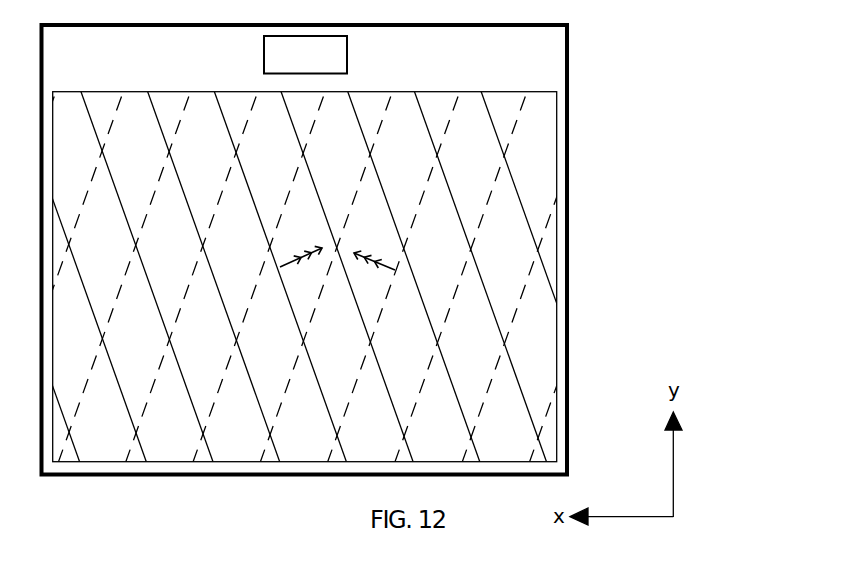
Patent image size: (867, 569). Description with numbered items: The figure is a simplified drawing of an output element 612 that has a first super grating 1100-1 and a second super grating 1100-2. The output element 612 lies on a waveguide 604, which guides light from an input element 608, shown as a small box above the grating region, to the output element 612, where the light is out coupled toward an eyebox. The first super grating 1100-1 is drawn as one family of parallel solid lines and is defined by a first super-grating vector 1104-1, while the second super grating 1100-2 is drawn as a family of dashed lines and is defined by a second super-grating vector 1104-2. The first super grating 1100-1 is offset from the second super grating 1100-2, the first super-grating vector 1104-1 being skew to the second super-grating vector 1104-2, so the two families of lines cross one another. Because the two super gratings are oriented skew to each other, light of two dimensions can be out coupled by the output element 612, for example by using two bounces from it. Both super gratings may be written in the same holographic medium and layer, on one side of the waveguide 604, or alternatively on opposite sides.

The waveguide 604 is at (568, 80).
The input element 608 is at (263, 57).
The output element 612 is at (343, 92).
The first super grating 1100-1 is at (690, 157).
The second super grating 1100-2 is at (682, 239).
The first super-grating vector 1104-1 is at (280, 266).
The second super-grating vector 1104-2 is at (396, 268).